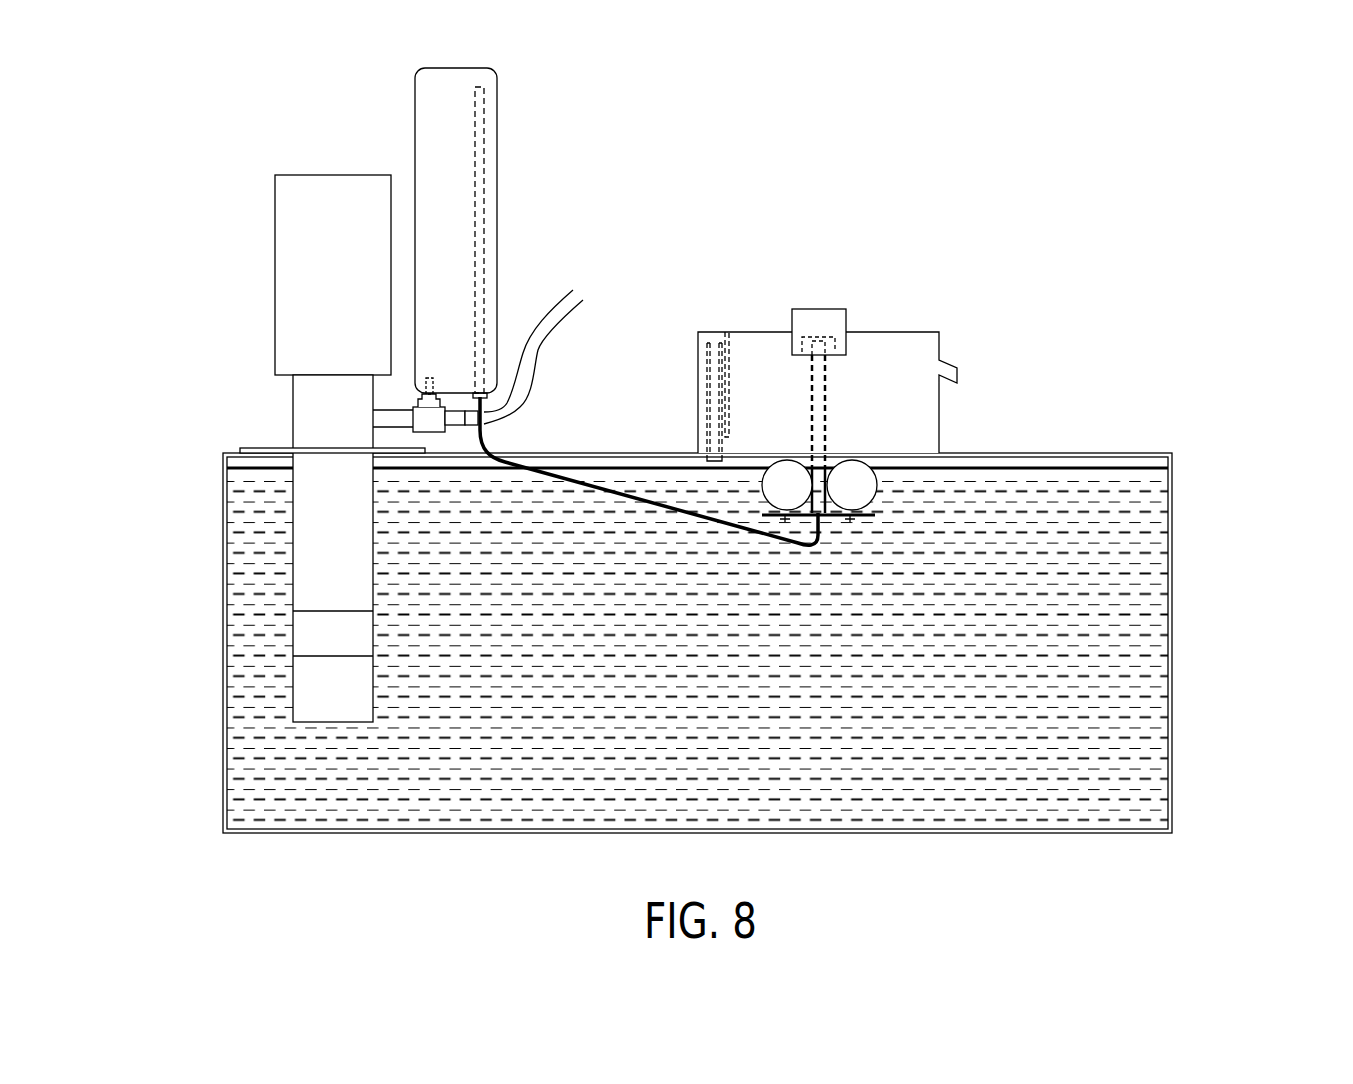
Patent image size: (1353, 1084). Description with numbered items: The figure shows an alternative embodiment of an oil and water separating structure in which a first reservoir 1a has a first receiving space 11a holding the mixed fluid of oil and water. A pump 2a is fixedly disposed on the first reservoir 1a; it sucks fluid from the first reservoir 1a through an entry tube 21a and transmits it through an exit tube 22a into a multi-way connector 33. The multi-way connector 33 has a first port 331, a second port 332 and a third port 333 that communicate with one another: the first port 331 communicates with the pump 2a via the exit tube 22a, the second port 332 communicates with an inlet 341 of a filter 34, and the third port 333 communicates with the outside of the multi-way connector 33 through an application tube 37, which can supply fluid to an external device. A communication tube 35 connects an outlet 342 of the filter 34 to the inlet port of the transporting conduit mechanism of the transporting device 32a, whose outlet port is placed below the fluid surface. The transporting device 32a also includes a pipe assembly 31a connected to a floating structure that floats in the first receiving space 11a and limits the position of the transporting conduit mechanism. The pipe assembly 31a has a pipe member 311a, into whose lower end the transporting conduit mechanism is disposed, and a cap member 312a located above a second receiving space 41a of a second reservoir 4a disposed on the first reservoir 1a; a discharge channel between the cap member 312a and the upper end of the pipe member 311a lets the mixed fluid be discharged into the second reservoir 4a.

The first reservoir 1a is at (1172, 673).
The first receiving space 11a is at (1145, 767).
The pump 2a is at (283, 193).
The entry tube 21a is at (318, 535).
The exit tube 22a is at (383, 418).
The multi-way connector 33 is at (358, 572).
The first port 331 is at (413, 428).
The second port 332 is at (418, 400).
The third port 333 is at (457, 422).
The filter 34 is at (491, 122).
The inlet 341 is at (428, 380).
The outlet 342 is at (519, 336).
The communication tube 35 is at (652, 503).
The application tube 37 is at (515, 403).
The second reservoir 4a is at (940, 403).
The second receiving space 41a is at (910, 435).
The pipe assembly 31a is at (924, 383).
The pipe member 311a is at (825, 387).
The cap member 312a is at (828, 310).
The transporting device 32a is at (859, 553).